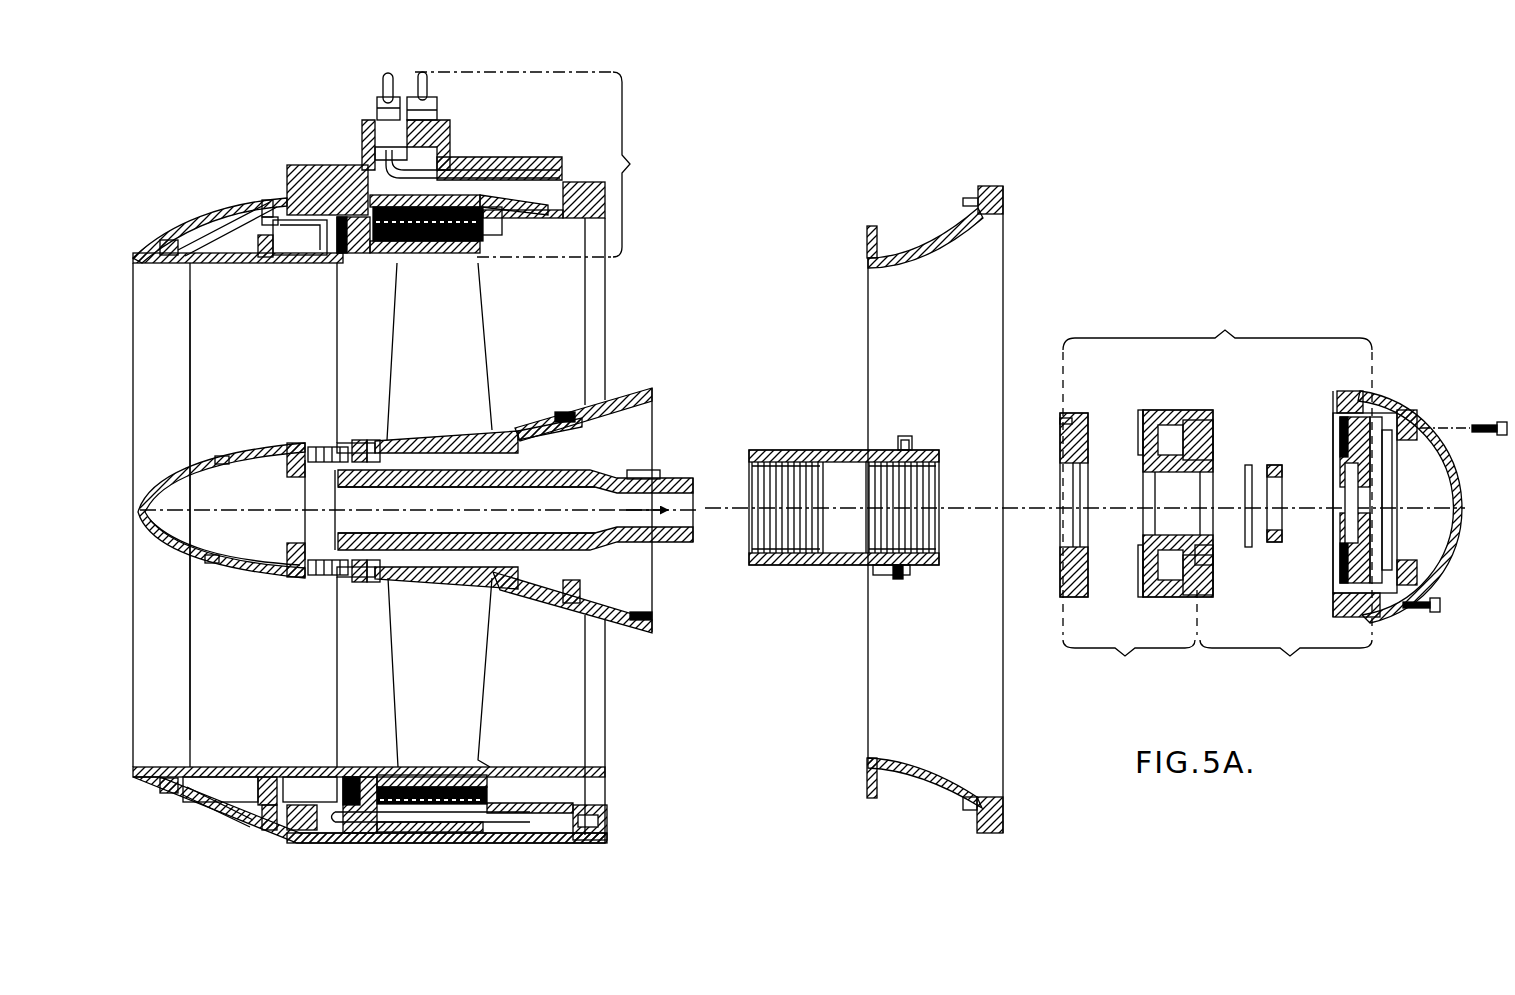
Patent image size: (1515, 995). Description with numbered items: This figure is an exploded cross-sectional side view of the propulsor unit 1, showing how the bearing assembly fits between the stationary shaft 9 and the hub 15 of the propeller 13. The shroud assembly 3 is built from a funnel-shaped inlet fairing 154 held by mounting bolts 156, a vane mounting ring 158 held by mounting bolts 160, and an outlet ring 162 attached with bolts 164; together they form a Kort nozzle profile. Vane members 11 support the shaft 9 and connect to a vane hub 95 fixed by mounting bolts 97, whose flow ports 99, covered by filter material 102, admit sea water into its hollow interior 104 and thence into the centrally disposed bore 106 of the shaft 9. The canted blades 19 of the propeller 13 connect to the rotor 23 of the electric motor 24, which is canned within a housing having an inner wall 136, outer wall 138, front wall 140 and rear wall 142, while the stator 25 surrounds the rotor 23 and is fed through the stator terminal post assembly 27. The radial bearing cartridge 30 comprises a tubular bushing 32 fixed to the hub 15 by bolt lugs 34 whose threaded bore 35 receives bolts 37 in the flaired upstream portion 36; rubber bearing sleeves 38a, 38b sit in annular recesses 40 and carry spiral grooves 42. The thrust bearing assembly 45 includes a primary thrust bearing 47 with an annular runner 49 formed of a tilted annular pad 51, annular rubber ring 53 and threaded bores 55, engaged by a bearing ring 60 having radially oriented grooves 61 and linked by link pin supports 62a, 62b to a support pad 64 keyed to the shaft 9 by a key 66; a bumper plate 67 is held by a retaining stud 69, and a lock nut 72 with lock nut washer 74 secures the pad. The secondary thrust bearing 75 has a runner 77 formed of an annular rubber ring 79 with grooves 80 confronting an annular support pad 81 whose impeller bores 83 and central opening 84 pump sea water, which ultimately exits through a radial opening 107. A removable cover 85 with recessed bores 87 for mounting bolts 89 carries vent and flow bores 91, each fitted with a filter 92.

The propulsor unit 1 is at (290, 160).
The shroud assembly 3 is at (228, 205).
The stationary shaft 9 is at (438, 489).
The vane members 11 is at (279, 347).
The propeller 13 is at (486, 378).
The hub 15 is at (516, 596).
The canted blades 19 is at (454, 396).
The rotor 23 is at (487, 238).
The electric motor 24 is at (541, 164).
The stator 25 is at (478, 163).
The stator terminal post assembly 27 is at (446, 108).
The radial bearing cartridge 30 is at (800, 445).
The tubular bushing 32 is at (838, 450).
The bolt lugs 34 is at (904, 440).
The threaded bore 35 is at (914, 442).
The flaired upstream portion 36 is at (648, 392).
The bolts 37 is at (560, 410).
The rubber bearing sleeve 38a is at (750, 553).
The rubber bearing sleeve 38b is at (920, 568).
The annular recesses 40 is at (820, 560).
The spiral grooves 42 is at (760, 490).
The thrust bearing assembly 45 is at (1217, 469).
The primary thrust bearing 47 is at (1129, 661).
The annular runner 49 is at (1080, 412).
The tilted annular pad 51 is at (1062, 605).
The annular rubber ring 53 is at (1080, 600).
The threaded bores 55 is at (1062, 420).
The bearing ring 60 is at (1155, 410).
The radially oriented grooves 61 is at (1140, 425).
The link pin support 62a is at (1168, 415).
The link pin support 62b is at (1162, 598).
The support pad 64 is at (1215, 445).
The key 66 is at (640, 470).
The bumper plate 67 is at (1210, 590).
The retaining stud 69 is at (1212, 560).
The lock nut 72 is at (1272, 465).
The lock nut washer 74 is at (1248, 550).
The secondary thrust bearing 75 is at (1286, 661).
The runner 77 is at (1352, 413).
The annular rubber ring 79 is at (1340, 440).
The grooves 80 is at (1340, 570).
The annular support pad 81 is at (1370, 450).
The impeller bores 83 is at (1370, 530).
The central opening 84 is at (1370, 483).
The removable cover 85 is at (1459, 510).
The recessed bores 87 is at (1420, 430).
The mounting bolts 89 is at (1497, 437).
The vent and flow bores 91 is at (1430, 570).
The filter 92 is at (1420, 568).
The vane hub 95 is at (188, 470).
The mounting bolts 97 is at (332, 447).
The flow ports 99 is at (228, 570).
The filter material 102 is at (222, 458).
The hollow interior 104 is at (222, 507).
The centrally disposed bore 106 is at (506, 507).
The radial opening 107 is at (362, 585).
The inner wall 136 is at (410, 263).
The outer wall 138 is at (468, 262).
The front wall 140 is at (488, 247).
The rear wall 142 is at (365, 263).
The inlet fairing 154 is at (958, 327).
The mounting bolts 156 is at (963, 200).
The vane mounting ring 158 is at (273, 262).
The mounting bolts 160 is at (268, 200).
The outlet ring 162 is at (175, 380).
The bolts 164 is at (172, 247).